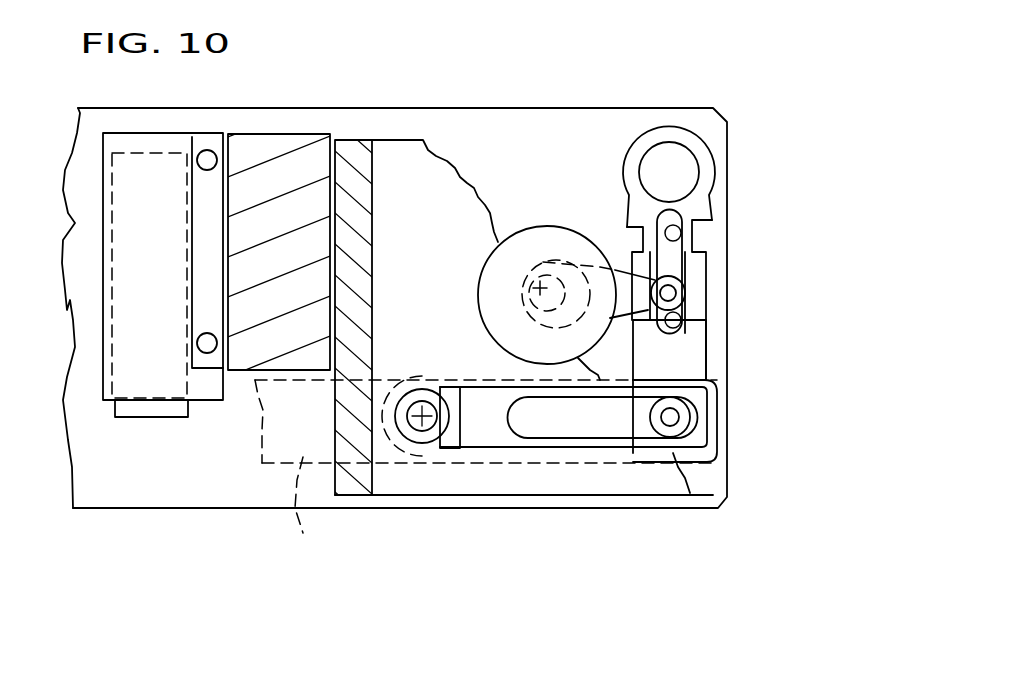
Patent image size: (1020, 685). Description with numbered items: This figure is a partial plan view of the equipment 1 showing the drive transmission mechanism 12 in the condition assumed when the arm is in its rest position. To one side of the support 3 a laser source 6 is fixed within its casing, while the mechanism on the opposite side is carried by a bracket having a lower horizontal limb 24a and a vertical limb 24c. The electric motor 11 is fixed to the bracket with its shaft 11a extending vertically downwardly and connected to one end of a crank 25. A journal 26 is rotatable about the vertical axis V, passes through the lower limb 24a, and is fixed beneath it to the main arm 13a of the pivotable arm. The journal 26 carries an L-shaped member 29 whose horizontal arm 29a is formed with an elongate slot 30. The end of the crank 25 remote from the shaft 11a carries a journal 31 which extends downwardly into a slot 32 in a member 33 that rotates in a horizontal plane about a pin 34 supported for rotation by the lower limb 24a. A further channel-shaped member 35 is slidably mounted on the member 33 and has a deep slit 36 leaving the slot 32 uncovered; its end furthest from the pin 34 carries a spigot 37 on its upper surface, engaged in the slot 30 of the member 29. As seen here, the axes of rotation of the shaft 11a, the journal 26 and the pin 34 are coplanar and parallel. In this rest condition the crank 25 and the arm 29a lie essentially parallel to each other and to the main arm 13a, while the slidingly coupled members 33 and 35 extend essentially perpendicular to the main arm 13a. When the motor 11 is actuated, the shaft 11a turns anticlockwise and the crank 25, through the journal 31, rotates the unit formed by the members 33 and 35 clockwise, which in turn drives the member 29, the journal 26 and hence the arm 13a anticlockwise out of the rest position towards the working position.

The equipment 1 is at (607, 90).
The support 3 is at (272, 150).
The laser source 6 is at (100, 233).
The electric motor 11 is at (543, 243).
The shaft 11a is at (522, 283).
The drive transmission mechanism 12 is at (723, 344).
The main arm 13a is at (467, 460).
The lower horizontal limb 24a is at (442, 177).
The vertical limb 24c is at (365, 175).
The crank 25 is at (572, 265).
The journal 26 is at (415, 400).
The L-shaped member 29 is at (467, 410).
The horizontal arm 29a is at (503, 430).
The elongate slot 30 is at (572, 423).
The journal 31 is at (670, 293).
The slot 32 is at (668, 228).
The member 33 is at (705, 197).
The pin 34 is at (688, 163).
The channel-shape member 35 is at (687, 363).
The deep slit 36 is at (700, 318).
The spigot 37 is at (658, 437).
The vertical axis V is at (412, 400).